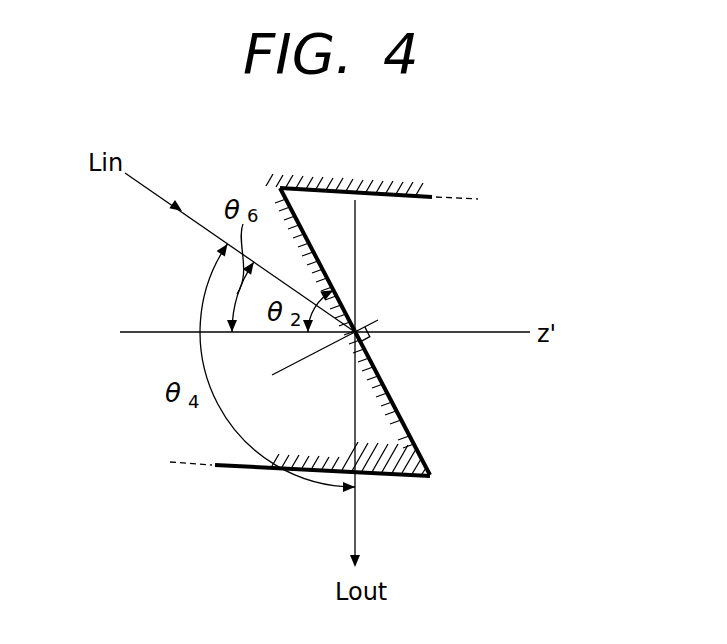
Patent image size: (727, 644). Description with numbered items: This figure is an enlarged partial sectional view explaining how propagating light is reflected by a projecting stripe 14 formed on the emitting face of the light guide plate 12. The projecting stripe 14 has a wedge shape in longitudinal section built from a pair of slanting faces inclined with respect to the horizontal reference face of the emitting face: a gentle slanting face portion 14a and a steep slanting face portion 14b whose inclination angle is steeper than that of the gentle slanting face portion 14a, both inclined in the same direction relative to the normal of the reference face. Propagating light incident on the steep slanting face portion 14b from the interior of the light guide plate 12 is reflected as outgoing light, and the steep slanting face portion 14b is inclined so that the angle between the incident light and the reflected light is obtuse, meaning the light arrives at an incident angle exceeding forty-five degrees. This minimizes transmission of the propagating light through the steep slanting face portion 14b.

The light guide plate 12 is at (328, 161).
The projecting stripe 14 is at (380, 445).
The gentle slanting face portion 14a is at (225, 472).
The steep slanting face portion 14b is at (401, 420).